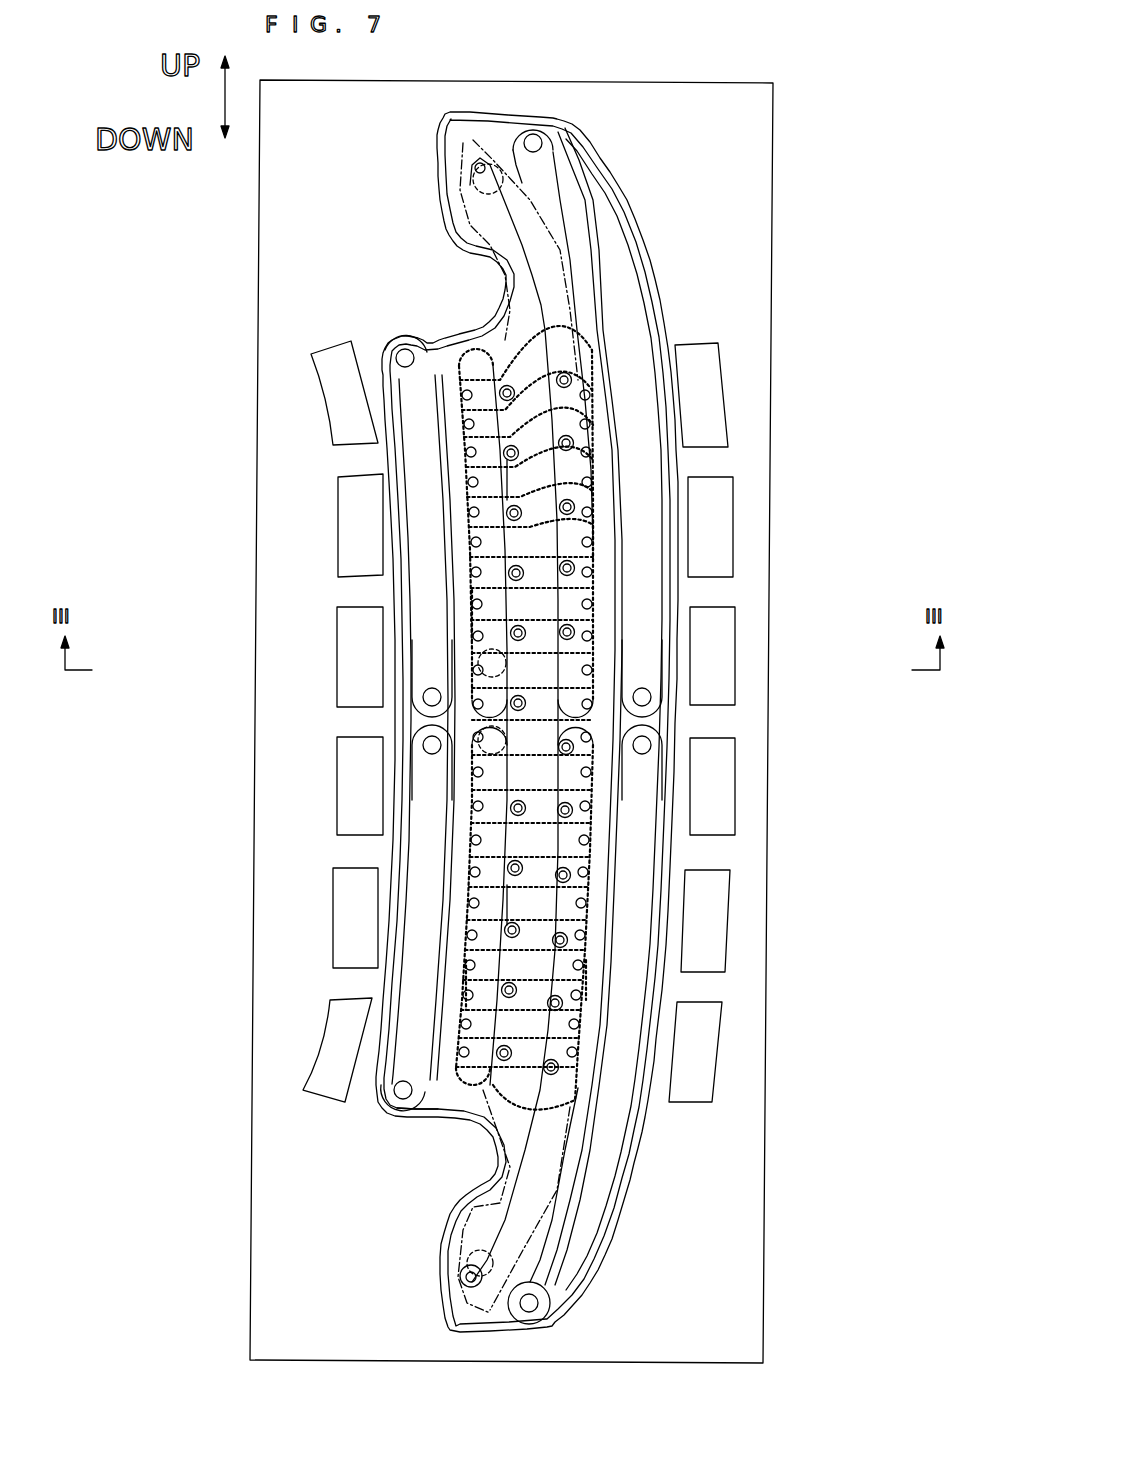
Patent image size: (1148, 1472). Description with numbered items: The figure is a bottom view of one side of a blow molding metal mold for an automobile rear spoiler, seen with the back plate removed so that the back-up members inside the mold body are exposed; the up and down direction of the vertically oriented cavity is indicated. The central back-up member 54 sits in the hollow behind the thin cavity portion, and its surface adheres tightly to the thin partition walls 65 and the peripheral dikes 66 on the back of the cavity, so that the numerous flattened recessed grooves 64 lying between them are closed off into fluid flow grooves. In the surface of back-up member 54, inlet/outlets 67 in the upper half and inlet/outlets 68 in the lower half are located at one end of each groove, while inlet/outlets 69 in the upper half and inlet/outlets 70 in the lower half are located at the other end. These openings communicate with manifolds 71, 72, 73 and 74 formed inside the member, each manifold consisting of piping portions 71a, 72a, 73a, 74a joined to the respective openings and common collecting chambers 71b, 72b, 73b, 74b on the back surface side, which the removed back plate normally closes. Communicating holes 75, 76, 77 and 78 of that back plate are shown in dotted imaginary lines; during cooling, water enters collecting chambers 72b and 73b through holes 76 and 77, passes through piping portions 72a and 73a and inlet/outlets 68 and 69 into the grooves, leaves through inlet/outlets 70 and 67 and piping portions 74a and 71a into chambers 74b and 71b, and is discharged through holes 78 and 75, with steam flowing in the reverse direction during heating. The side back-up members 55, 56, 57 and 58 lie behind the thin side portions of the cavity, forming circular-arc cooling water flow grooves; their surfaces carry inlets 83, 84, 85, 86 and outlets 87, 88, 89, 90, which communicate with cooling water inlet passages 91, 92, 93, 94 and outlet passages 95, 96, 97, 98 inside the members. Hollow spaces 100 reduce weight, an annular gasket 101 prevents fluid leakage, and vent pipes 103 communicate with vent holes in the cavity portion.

The back-up member 54 is at (490, 335).
The back-up member 55 is at (620, 268).
The back-up member 56 is at (625, 1130).
The back-up member 57 is at (415, 582).
The back-up member 58 is at (412, 1005).
The recessed grooves 64 is at (495, 928).
The partition walls 65 is at (465, 960).
The dikes 66 is at (478, 858).
The inlet/outlets 67 is at (735, 536).
The inlet/outlets 68 is at (737, 981).
The inlet/outlets 69 is at (290, 618).
The inlet/outlets 70 is at (287, 985).
The manifold 71 is at (502, 694).
The piping portions 71a is at (590, 540).
The collecting chamber 71b is at (550, 252).
The manifold 72 is at (497, 941).
The piping portions 72a is at (585, 978).
The collecting chamber 72b is at (537, 1085).
The manifold 73 is at (470, 478).
The piping portions 73a is at (480, 608).
The collecting chamber 73b is at (500, 480).
The manifold 74 is at (462, 1030).
The piping portions 74a is at (465, 995).
The collecting chamber 74b is at (500, 905).
The communicating hole 75 is at (503, 190).
The communicating hole 76 is at (490, 1255).
The communicating hole 77 is at (490, 675).
The communicating hole 78 is at (480, 748).
The inlet 83 is at (752, 672).
The inlet 84 is at (614, 1290).
The inlet 85 is at (290, 682).
The inlet 86 is at (363, 1127).
The outlet 87 is at (605, 129).
The outlet 88 is at (748, 745).
The outlet 89 is at (374, 320).
The outlet 90 is at (290, 762).
The cooling water inlet passage 91 is at (647, 697).
The cooling water inlet passage 92 is at (538, 1302).
The cooling water inlet passage 93 is at (428, 697).
The cooling water inlet passage 94 is at (403, 1100).
The cooling water outlet passage 95 is at (542, 141).
The cooling water outlet passage 96 is at (647, 745).
The cooling water outlet passage 97 is at (405, 355).
The cooling water outlet passage 98 is at (428, 745).
The hollow spaces 100 is at (348, 542).
The annular gasket 101 is at (437, 190).
The vent pipes 103 is at (416, 724).